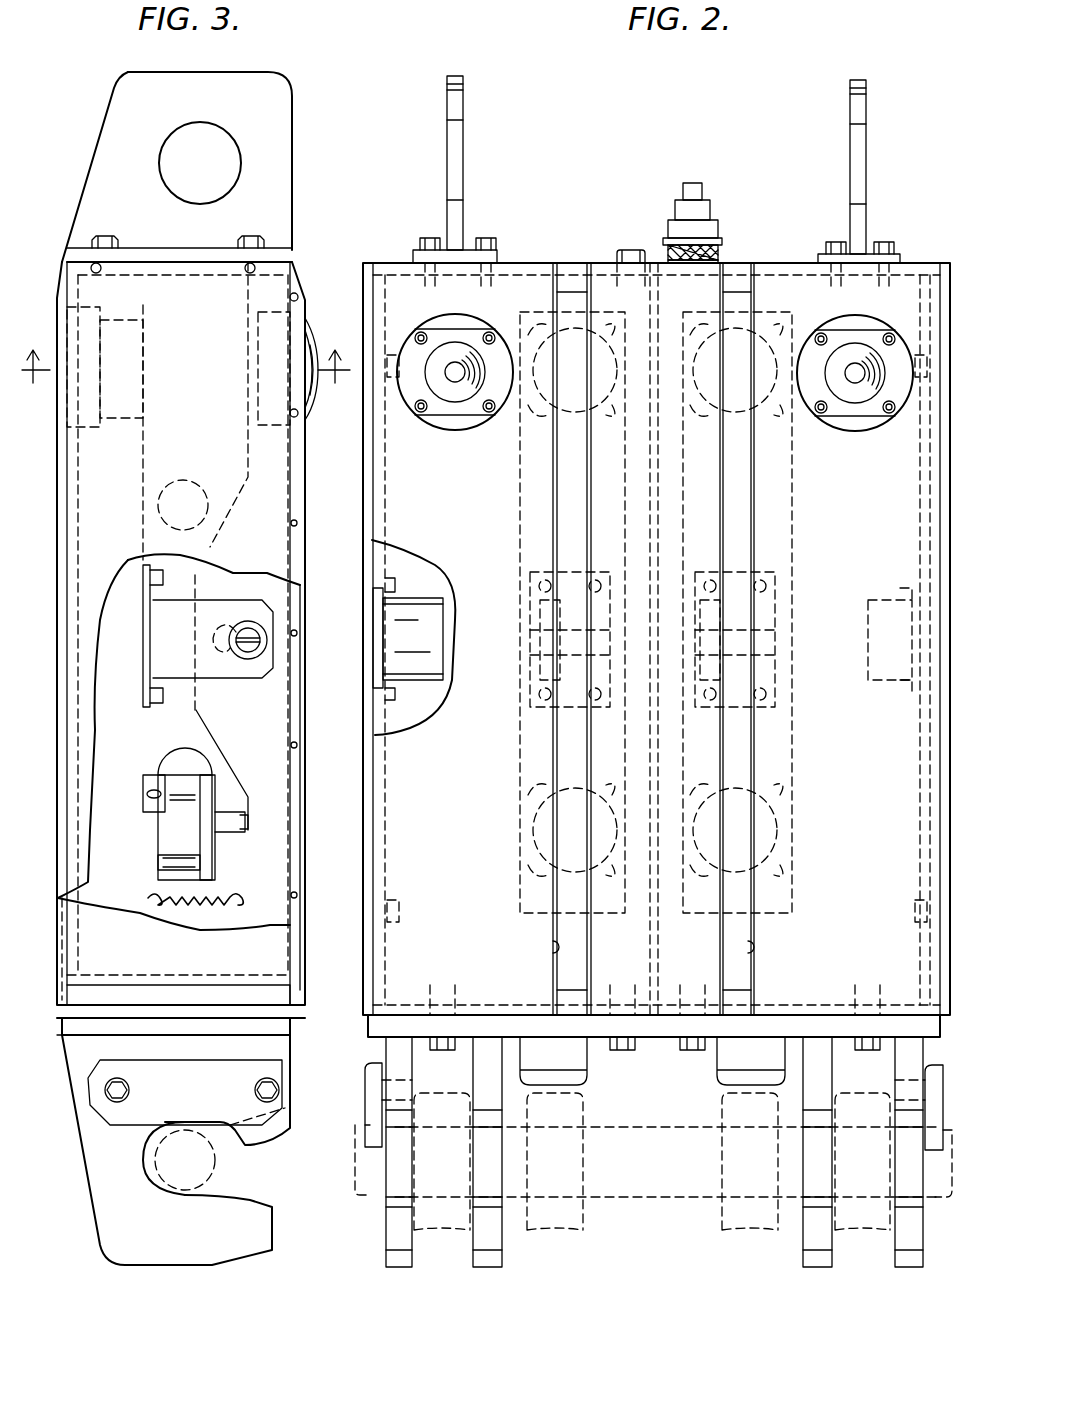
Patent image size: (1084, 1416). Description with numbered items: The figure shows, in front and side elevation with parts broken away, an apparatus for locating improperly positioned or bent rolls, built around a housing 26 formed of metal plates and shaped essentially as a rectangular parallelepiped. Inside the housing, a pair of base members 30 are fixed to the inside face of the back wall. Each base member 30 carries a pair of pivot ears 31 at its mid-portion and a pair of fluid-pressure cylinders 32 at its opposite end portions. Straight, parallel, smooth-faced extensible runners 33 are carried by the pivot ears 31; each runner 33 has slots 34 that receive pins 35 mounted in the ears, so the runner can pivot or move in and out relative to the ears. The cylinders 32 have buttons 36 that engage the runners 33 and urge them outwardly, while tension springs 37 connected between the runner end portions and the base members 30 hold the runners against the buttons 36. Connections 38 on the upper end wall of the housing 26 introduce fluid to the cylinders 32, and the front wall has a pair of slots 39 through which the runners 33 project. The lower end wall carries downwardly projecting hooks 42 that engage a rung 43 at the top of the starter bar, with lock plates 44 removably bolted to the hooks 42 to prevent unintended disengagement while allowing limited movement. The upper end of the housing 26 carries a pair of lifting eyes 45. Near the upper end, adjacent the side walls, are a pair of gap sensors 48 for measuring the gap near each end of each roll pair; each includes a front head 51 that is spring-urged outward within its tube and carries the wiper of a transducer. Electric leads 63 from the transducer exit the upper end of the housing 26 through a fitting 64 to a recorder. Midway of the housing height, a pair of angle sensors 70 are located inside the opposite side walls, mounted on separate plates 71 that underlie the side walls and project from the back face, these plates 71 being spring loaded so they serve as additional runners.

In FIG. 3, the housing 26 is at (124, 466).
In FIG. 2, the housing 26 is at (470, 898).
In FIG. 3, the base member 30 is at (132, 750).
In FIG. 2, the base member 30 is at (528, 735).
In FIG. 3, the pivot ear 31 is at (248, 676).
In FIG. 2, the pivot ear 31 is at (530, 600).
In FIG. 3, the fluid-pressure cylinder 32 is at (198, 832).
In FIG. 2, the fluid-pressure cylinder 32 is at (572, 412).
In FIG. 3, the extensible runner 33 is at (305, 888).
In FIG. 2, the extensible runner 33 is at (566, 512).
In FIG. 3, the slot 34 is at (226, 660).
In FIG. 3, the pin 35 is at (250, 622).
In FIG. 2, the pin 35 is at (535, 650).
In FIG. 3, the button 36 is at (255, 832).
In FIG. 3, the tension spring 37 is at (200, 910).
In FIG. 2, the connection 38 is at (628, 250).
In FIG. 2, the slot 39 is at (553, 947).
In FIG. 3, the hook 42 is at (255, 1252).
In FIG. 2, the hook 42 is at (412, 1262).
In FIG. 3, the rung 43 is at (225, 1162).
In FIG. 2, the rung 43 is at (660, 1205).
In FIG. 3, the lock plate 44 is at (145, 1110).
In FIG. 2, the lock plate 44 is at (365, 1112).
In FIG. 3, the lifting eye 45 is at (292, 146).
In FIG. 2, the lifting eye 45 is at (463, 142).
In FIG. 3, the gap sensor 48 is at (308, 322).
In FIG. 2, the gap sensor 48 is at (446, 434).
In FIG. 3, the front head 51 is at (318, 378).
In FIG. 2, the front head 51 is at (458, 378).
In FIG. 2, the electric leads 63 is at (700, 183).
In FIG. 2, the fitting 64 is at (718, 226).
In FIG. 2, the angle sensor 70 is at (432, 649).
In FIG. 3, the plate 71 is at (60, 930).
In FIG. 2, the plate 71 is at (395, 725).